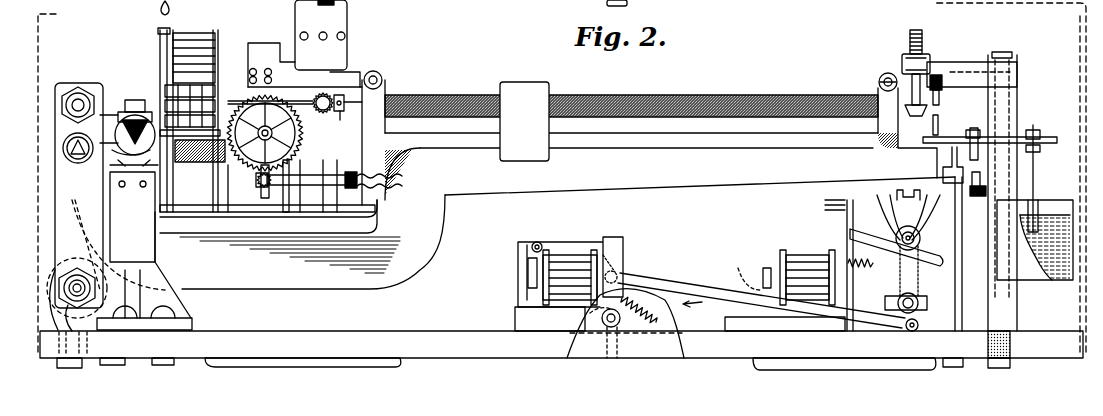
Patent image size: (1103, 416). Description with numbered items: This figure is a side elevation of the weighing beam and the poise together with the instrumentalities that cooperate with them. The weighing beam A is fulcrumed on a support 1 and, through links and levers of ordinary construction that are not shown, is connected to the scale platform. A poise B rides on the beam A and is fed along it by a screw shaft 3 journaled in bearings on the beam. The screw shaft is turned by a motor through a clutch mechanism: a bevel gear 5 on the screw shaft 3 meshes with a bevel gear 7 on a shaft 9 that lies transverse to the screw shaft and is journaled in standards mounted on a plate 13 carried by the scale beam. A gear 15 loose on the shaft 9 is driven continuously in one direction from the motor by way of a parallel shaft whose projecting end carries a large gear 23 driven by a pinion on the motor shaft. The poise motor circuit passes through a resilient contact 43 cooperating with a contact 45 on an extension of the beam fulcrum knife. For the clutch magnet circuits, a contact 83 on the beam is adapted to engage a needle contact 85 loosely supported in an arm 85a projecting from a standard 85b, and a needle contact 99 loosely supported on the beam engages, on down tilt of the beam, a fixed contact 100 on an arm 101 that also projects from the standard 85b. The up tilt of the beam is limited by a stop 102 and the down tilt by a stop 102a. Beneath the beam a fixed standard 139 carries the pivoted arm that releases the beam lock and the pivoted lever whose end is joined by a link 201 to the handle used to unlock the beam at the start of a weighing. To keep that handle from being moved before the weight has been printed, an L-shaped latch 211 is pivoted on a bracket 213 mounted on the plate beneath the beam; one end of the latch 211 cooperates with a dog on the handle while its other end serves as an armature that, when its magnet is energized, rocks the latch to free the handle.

The support 1 is at (120, 213).
The screw shaft 3 is at (448, 99).
The bevel gear 5 is at (337, 110).
The bevel gear 7 is at (317, 96).
The shaft 9 is at (238, 52).
The plate 13 is at (277, 236).
The gear 15 is at (347, 95).
The large gear 23 is at (303, 150).
The resilient contact 43 is at (140, 148).
The contact 45 is at (115, 133).
The contact 83 is at (940, 122).
The needle contact 85 is at (940, 98).
The arm 85a is at (958, 70).
The standard 85b is at (1010, 110).
The needle contact 99 is at (978, 156).
The fixed contact 100 is at (985, 180).
The arm 101 is at (986, 192).
The stop 102 is at (912, 95).
The stop 102a is at (943, 166).
The fixed standard 139 is at (918, 272).
The link 201 is at (693, 292).
The L-shaped latch 211 is at (573, 246).
The bracket 213 is at (528, 245).
The weighing beam A is at (677, 174).
The poise B is at (516, 84).